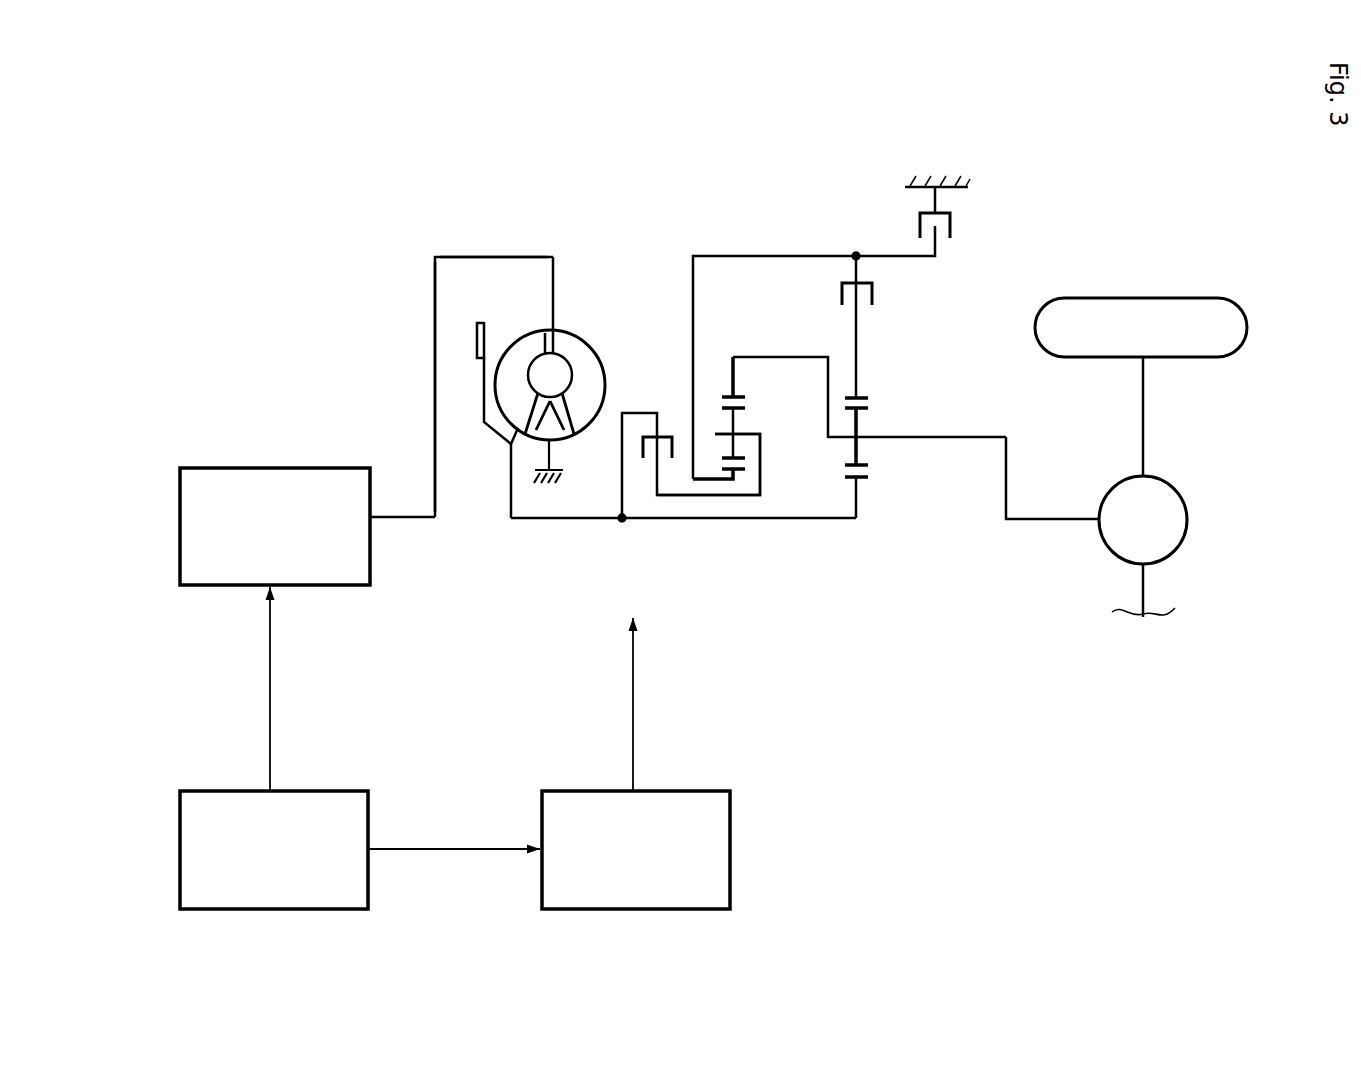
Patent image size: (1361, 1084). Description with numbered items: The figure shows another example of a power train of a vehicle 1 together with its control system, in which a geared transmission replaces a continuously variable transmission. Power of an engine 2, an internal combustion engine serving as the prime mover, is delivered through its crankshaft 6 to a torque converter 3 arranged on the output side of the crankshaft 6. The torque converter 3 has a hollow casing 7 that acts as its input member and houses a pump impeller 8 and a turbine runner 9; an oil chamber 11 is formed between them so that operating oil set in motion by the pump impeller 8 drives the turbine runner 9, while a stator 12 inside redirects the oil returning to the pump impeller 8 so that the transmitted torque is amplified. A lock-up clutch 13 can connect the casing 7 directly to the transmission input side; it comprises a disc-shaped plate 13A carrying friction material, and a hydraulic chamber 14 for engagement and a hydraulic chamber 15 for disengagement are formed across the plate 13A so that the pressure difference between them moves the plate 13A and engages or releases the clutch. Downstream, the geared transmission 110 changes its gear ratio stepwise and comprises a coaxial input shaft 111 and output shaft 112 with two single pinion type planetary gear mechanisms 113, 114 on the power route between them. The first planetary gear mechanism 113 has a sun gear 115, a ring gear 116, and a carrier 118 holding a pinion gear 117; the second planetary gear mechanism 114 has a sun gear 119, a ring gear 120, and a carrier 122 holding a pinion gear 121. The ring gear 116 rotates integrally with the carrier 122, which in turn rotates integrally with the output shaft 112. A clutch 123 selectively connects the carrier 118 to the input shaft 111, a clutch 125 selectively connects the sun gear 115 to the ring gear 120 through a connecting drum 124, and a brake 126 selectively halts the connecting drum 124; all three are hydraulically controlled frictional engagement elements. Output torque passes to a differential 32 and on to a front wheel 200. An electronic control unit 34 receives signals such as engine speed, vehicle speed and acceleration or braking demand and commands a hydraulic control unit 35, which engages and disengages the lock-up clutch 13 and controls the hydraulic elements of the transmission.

The vehicle 1 is at (975, 628).
The engine 2 is at (268, 475).
The torque converter 3 is at (466, 250).
The crankshaft 6 is at (404, 522).
The casing 7 is at (466, 322).
The pump impeller 8 is at (585, 355).
The turbine runner 9 is at (532, 345).
The oil chamber 11 is at (553, 375).
The stator 12 is at (560, 440).
The lock-up clutch 13 is at (476, 340).
The plate 13A is at (482, 425).
The hydraulic chamber 14 is at (505, 305).
The hydraulic chamber 15 is at (452, 385).
The differential 32 is at (1185, 520).
The electronic control unit 34 is at (336, 791).
The hydraulic control unit 35 is at (697, 791).
The geared transmission 110 is at (650, 527).
The input shaft 111 is at (548, 522).
The output shaft 112 is at (1045, 522).
The planetary gear mechanism 113 is at (735, 527).
The planetary gear mechanism 114 is at (857, 529).
The sun gear 115 is at (740, 474).
The ring gear 116 is at (720, 400).
The pinion gear 117 is at (733, 420).
The carrier 118 is at (762, 447).
The sun gear 119 is at (862, 478).
The ring gear 120 is at (868, 398).
The pinion gear 121 is at (872, 408).
The carrier 122 is at (1002, 437).
The clutch 123 is at (657, 431).
The connecting drum 124 is at (738, 256).
The clutch 125 is at (882, 292).
The brake 126 is at (965, 228).
The wheel 200 is at (1178, 305).